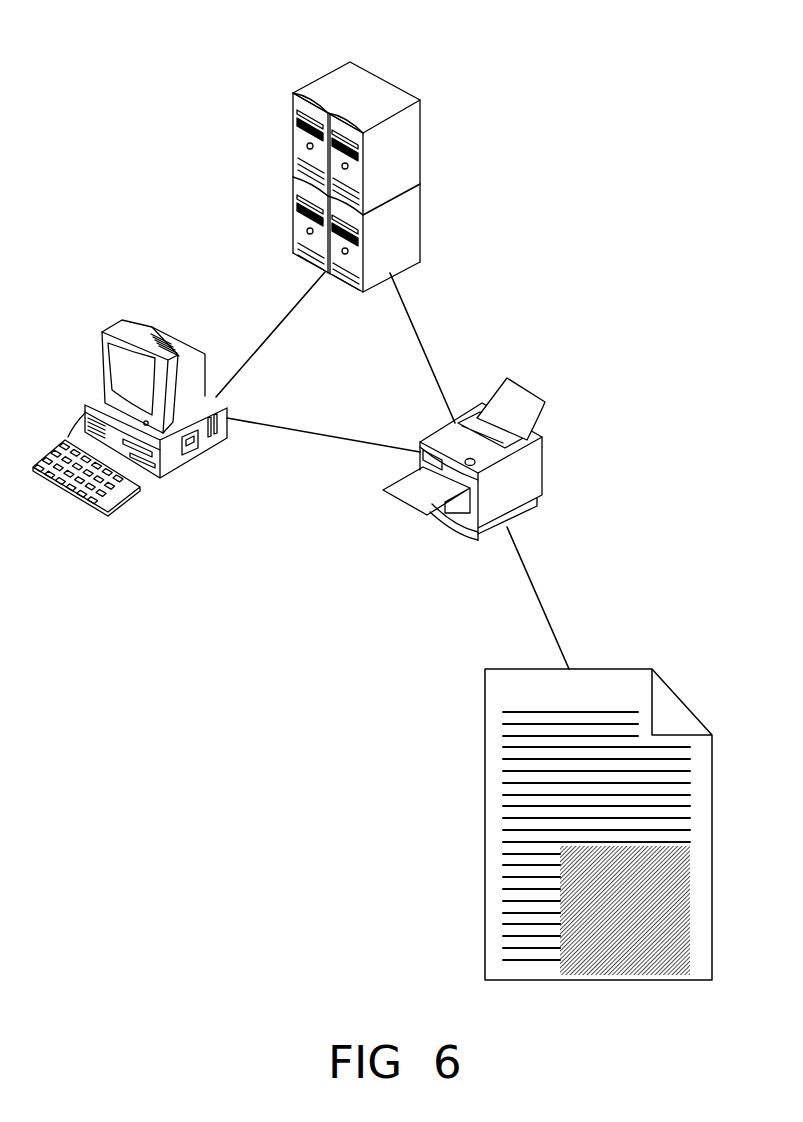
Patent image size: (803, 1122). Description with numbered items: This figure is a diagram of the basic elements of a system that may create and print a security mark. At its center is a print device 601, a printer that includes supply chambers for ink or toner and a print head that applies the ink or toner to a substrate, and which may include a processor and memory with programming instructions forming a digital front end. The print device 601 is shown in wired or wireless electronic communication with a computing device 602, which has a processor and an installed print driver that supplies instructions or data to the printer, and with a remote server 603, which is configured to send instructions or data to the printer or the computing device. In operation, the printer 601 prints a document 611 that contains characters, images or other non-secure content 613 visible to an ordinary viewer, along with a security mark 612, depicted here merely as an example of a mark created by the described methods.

The print device 601 is at (543, 467).
The computing device 602 is at (193, 458).
The remote server 603 is at (381, 81).
The document 611 is at (549, 807).
The security mark 612 is at (618, 973).
The non-secure content 613 is at (503, 820).